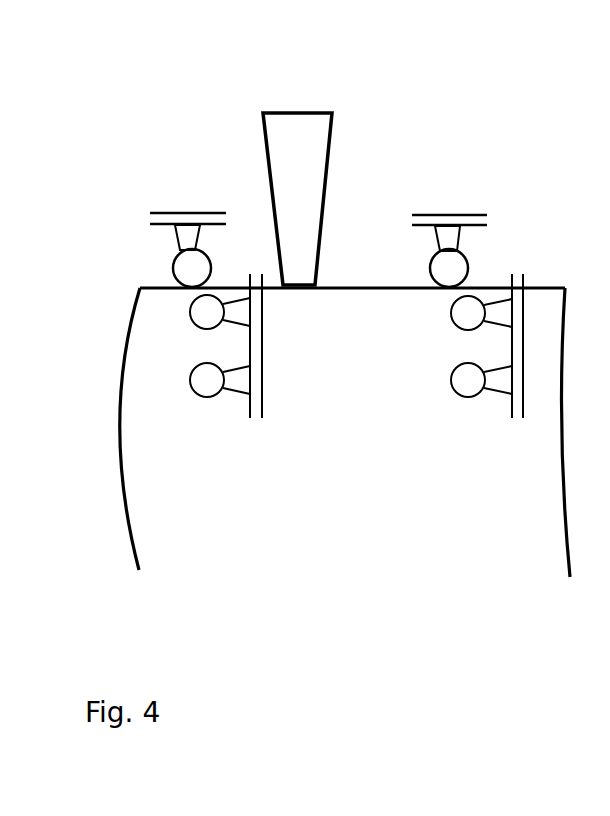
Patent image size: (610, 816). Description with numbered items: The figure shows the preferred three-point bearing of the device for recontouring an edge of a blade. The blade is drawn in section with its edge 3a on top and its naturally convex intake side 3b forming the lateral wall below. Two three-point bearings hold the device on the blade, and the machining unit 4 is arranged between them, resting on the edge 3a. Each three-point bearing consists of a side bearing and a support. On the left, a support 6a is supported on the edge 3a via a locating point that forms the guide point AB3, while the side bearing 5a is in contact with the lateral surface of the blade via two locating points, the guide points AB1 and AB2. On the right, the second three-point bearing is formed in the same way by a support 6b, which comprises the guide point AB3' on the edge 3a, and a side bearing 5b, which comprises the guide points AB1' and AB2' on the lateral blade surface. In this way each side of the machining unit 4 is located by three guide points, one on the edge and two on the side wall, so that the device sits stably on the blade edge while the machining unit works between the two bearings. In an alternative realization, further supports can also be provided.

The edge of the blade 3a is at (358, 276).
The convex intake side 3b is at (172, 437).
The machining unit 4 is at (300, 140).
The side bearing 5a is at (250, 350).
The side bearing 5b is at (518, 353).
The support 6a is at (176, 199).
The support 6b is at (460, 194).
The guide point AB1 is at (220, 393).
The guide point AB2 is at (220, 323).
The guide point AB3 is at (170, 261).
The guide point AB1' is at (481, 393).
The guide point AB2' is at (481, 324).
The guide point AB3' is at (469, 261).